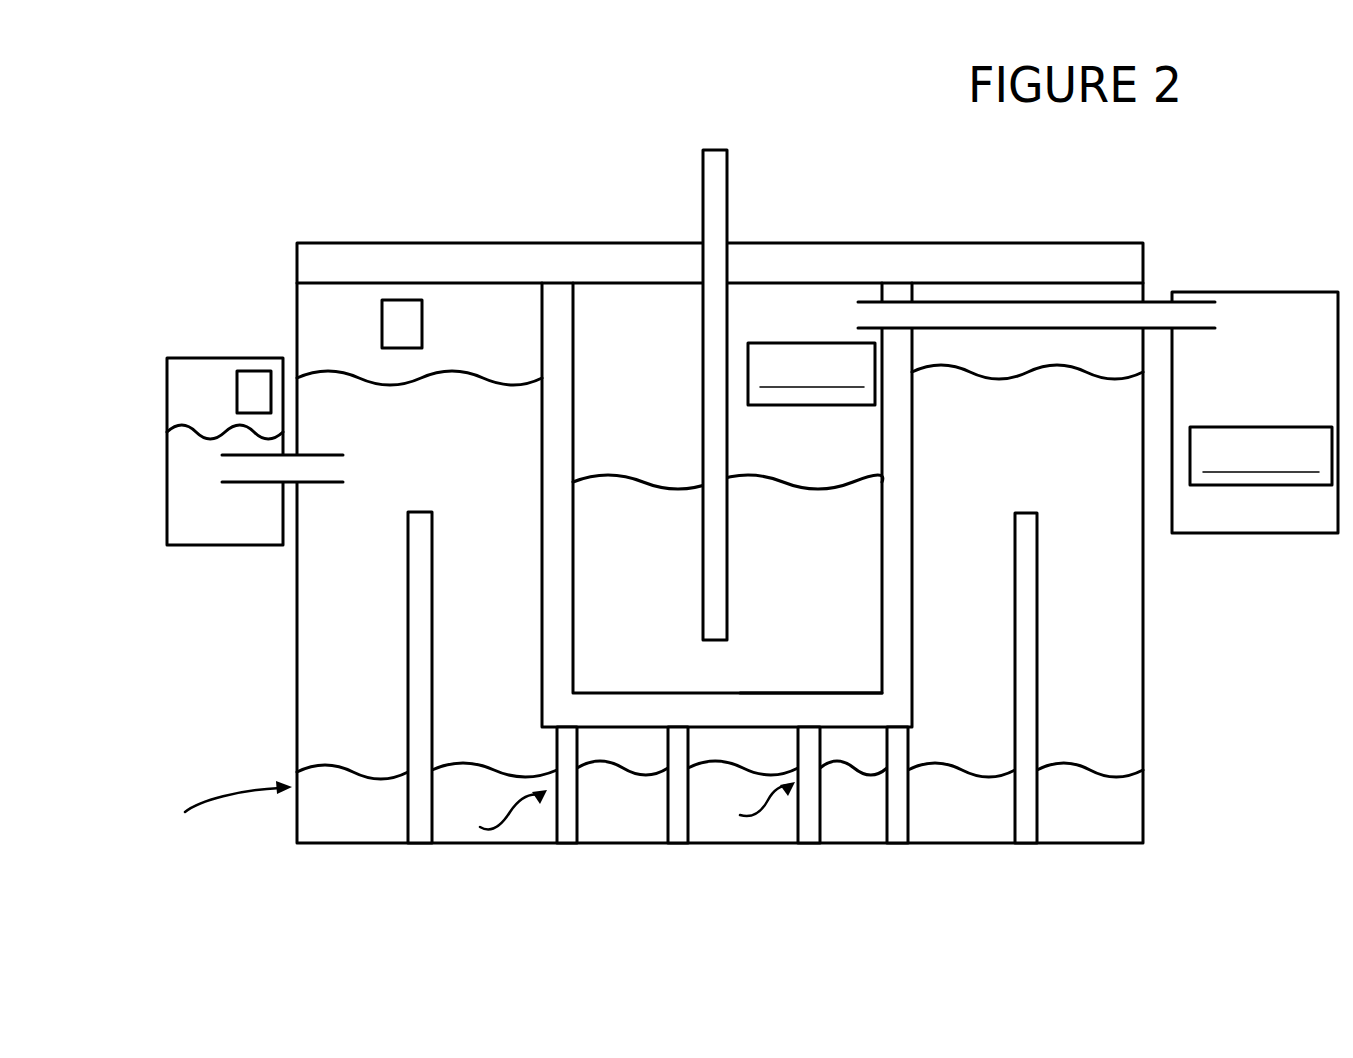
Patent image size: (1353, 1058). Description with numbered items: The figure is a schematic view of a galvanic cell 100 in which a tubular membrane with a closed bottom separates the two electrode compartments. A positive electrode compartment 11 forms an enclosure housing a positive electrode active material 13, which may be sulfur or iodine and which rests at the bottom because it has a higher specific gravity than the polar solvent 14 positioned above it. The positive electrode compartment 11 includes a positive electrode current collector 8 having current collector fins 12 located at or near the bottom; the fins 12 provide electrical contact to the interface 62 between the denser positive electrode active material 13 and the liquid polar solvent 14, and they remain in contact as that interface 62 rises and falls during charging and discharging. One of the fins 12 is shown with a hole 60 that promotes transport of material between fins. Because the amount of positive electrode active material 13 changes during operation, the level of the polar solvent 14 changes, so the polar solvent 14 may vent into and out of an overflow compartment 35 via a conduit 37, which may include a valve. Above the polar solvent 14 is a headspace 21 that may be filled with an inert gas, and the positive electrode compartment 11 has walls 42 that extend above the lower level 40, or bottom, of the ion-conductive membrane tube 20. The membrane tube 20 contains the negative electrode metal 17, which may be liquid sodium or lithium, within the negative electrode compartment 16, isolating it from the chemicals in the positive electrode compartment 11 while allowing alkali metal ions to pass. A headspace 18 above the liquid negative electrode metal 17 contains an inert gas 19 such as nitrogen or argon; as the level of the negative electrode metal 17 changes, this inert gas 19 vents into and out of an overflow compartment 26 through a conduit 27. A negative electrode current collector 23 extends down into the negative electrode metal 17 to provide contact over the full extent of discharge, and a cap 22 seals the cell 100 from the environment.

The galvanic cell 100 is at (222, 821).
The positive electrode compartment 11 is at (1143, 645).
The cap 22 is at (848, 278).
The negative electrode current collector 23 is at (703, 152).
The conduit 27 is at (1152, 296).
The overflow compartment 26 is at (1280, 292).
The inert gas 19 is at (382, 318).
The headspace 21 is at (465, 357).
The polar solvent 14 is at (463, 454).
The ion-conductive membrane tube 20 is at (573, 350).
The negative electrode compartment 16 is at (573, 387).
The negative electrode metal 17 is at (643, 621).
The headspace 18 is at (616, 459).
The lower level 40 is at (773, 692).
The current collector fins 12 is at (432, 572).
The positive electrode active material 13 is at (358, 822).
The interface 62 is at (497, 752).
The positive electrode current collector 8 is at (502, 813).
The hole 60 is at (750, 808).
The conduit 37 is at (315, 482).
The overflow compartment 35 is at (167, 478).
The walls 42 is at (297, 333).